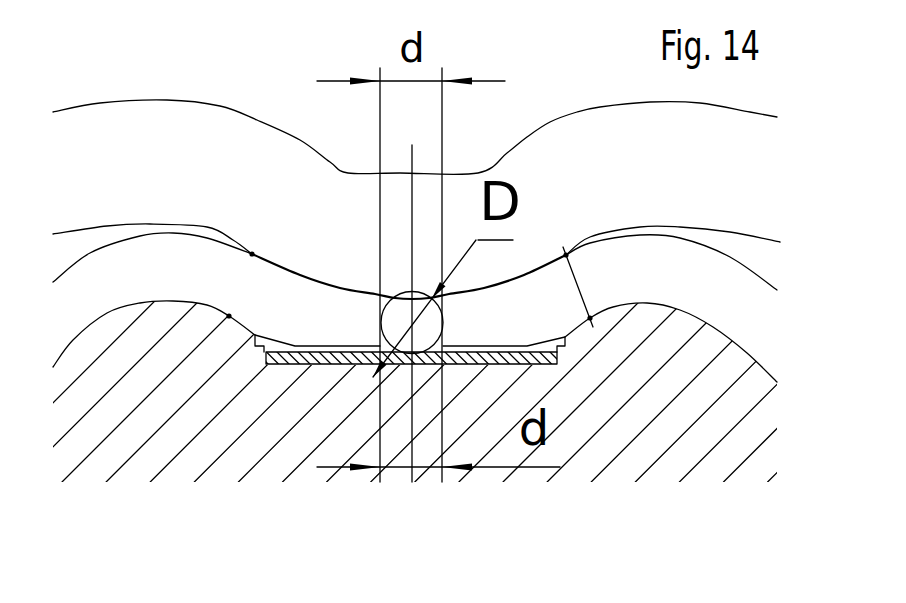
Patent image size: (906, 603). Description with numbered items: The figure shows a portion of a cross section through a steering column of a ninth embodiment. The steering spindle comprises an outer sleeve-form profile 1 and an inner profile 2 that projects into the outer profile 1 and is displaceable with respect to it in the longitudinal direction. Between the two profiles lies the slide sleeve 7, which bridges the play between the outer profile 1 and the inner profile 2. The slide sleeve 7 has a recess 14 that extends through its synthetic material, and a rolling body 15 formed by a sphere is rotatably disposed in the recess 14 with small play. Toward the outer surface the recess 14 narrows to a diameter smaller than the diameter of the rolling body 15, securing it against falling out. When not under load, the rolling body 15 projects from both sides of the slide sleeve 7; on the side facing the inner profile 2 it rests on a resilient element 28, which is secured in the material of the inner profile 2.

The outer profile 1 is at (267, 163).
The inner profile 2 is at (637, 418).
The slide sleeve 7 is at (627, 250).
The recess 14 is at (396, 309).
The rolling body 15 is at (384, 296).
The resilient element 28 is at (309, 365).